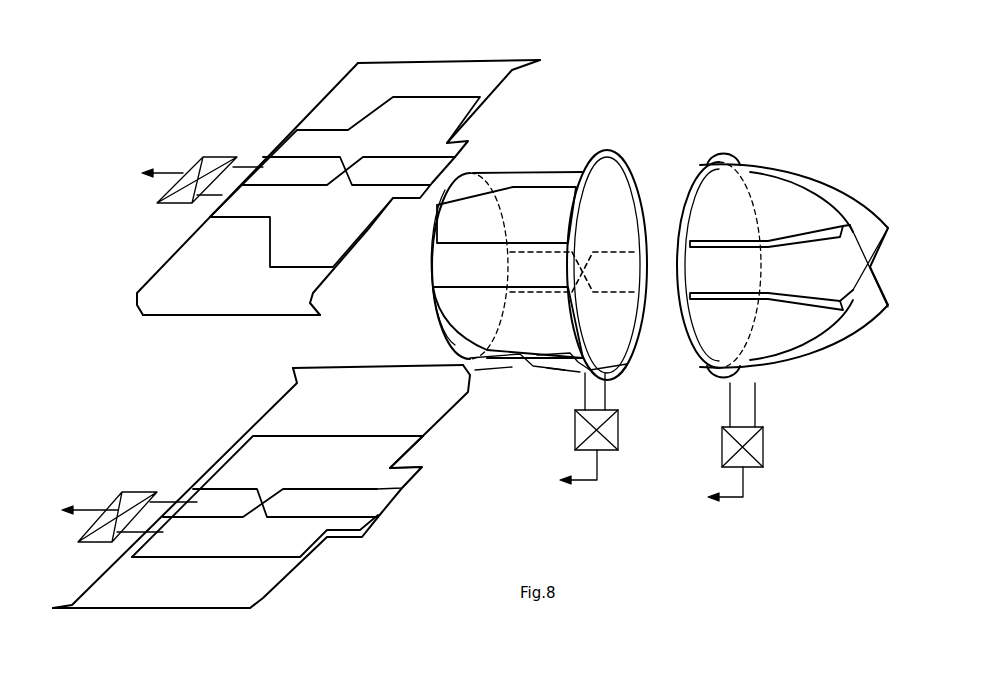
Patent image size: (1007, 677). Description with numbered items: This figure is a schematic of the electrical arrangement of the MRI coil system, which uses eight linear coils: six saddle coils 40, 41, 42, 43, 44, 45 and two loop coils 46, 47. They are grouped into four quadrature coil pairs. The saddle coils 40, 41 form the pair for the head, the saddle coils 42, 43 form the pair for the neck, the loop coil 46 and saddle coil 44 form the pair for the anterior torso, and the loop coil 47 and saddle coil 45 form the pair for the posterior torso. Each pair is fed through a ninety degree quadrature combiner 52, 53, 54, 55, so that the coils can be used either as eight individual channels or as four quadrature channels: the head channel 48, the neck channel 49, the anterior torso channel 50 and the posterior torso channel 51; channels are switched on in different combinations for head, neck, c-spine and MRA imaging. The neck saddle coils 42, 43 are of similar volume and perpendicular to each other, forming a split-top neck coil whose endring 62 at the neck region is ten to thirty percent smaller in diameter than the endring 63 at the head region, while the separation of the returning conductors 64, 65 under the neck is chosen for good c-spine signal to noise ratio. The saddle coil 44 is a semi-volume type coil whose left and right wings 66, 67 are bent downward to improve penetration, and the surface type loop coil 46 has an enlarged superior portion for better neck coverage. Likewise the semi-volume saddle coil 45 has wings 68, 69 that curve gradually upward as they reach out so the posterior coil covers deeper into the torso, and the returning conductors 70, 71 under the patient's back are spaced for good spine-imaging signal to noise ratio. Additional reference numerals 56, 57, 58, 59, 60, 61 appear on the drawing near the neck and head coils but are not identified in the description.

The saddle coil 40 is at (693, 362).
The saddle coil 41 is at (712, 375).
The saddle coil 42 is at (430, 300).
The saddle coil 43 is at (472, 187).
The saddle coil 44 is at (148, 264).
The saddle coil 45 is at (343, 538).
The loop coil 46 is at (262, 157).
The loop coil 47 is at (383, 500).
The head channel 48 is at (725, 503).
The neck channel 49 is at (577, 483).
The anterior torso channel 50 is at (178, 172).
The posterior torso channel 51 is at (88, 508).
The quadrature combiner 52 is at (765, 440).
The quadrature combiner 53 is at (620, 427).
The quadrature combiner 54 is at (225, 152).
The quadrature combiner 55 is at (145, 488).
The upper electrode strip 56 is at (707, 247).
The lower electrode strip 57 is at (728, 298).
The dome housing 58 is at (848, 193).
The inner dome wall 59 is at (800, 188).
The mounting ring 60 is at (681, 210).
The ring tab 61 is at (732, 152).
The endring 62 is at (432, 228).
The endring 63 is at (644, 213).
The returning conductor 64 is at (522, 352).
The returning conductor 65 is at (498, 352).
The left wing 66 is at (222, 315).
The right wing 67 is at (432, 60).
The wing 68 is at (143, 608).
The wing 69 is at (355, 366).
The returning conductor 70 is at (310, 518).
The returning conductor 71 is at (422, 474).